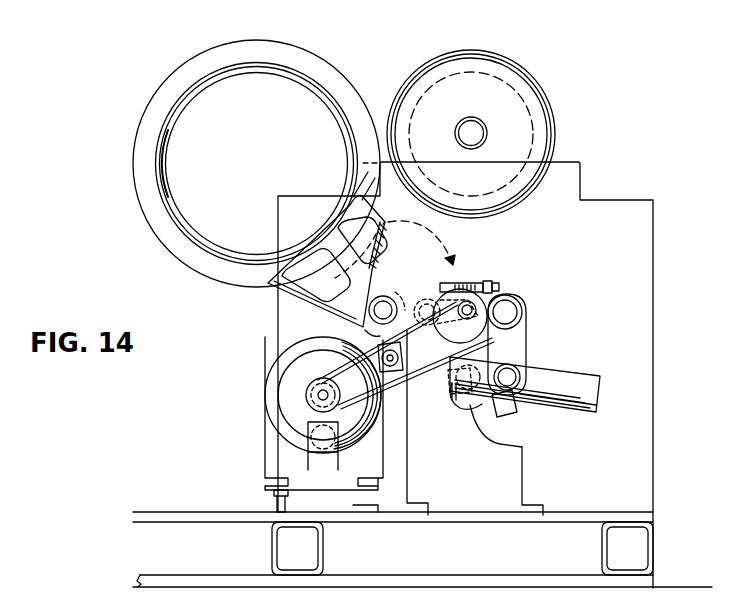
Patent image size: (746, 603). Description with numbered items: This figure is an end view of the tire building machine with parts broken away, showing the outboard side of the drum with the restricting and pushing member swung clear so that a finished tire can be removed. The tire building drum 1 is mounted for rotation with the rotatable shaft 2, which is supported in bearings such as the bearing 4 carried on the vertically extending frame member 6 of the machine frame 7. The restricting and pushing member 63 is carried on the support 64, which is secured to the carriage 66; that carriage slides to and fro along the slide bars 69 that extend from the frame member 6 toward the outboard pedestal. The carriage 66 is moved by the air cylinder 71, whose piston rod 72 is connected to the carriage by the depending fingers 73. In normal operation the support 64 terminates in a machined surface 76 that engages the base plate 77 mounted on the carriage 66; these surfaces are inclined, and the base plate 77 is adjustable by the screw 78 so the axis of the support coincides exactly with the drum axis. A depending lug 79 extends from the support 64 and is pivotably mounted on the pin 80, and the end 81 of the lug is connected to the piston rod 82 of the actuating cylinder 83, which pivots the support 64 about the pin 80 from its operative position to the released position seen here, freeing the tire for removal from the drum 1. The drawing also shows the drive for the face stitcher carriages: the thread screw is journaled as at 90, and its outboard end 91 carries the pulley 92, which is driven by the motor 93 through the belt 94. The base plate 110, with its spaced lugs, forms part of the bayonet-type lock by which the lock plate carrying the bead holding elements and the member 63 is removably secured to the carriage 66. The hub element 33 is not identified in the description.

The tire building drum 1 is at (496, 52).
The rotatable shaft 2 is at (476, 125).
The bearing 4 is at (538, 92).
The frame member 6 is at (650, 203).
The machine frame 7 is at (652, 518).
The hub bearing 33 is at (478, 148).
The restricting and pushing member 63 is at (290, 49).
The support 64 is at (286, 292).
The carriage 66 is at (524, 306).
The slide bars 69 is at (427, 300).
The air cylinder 71 is at (480, 404).
The piston rod 72 is at (472, 402).
The depending fingers 73 is at (506, 406).
The machined surface 76 is at (384, 250).
The base plate 77 is at (460, 283).
The screw 78 is at (498, 283).
The depending lug 79 is at (366, 330).
The pin 80 is at (385, 305).
The end of lug 81 is at (380, 362).
The piston rod 82 is at (443, 385).
The actuating cylinder 83 is at (565, 378).
The journal 90 is at (512, 300).
The outboard end of screw 91 is at (463, 314).
The pulley 92 is at (522, 345).
The motor 93 is at (285, 395).
The belt 94 is at (326, 379).
The base plate 110 is at (160, 158).